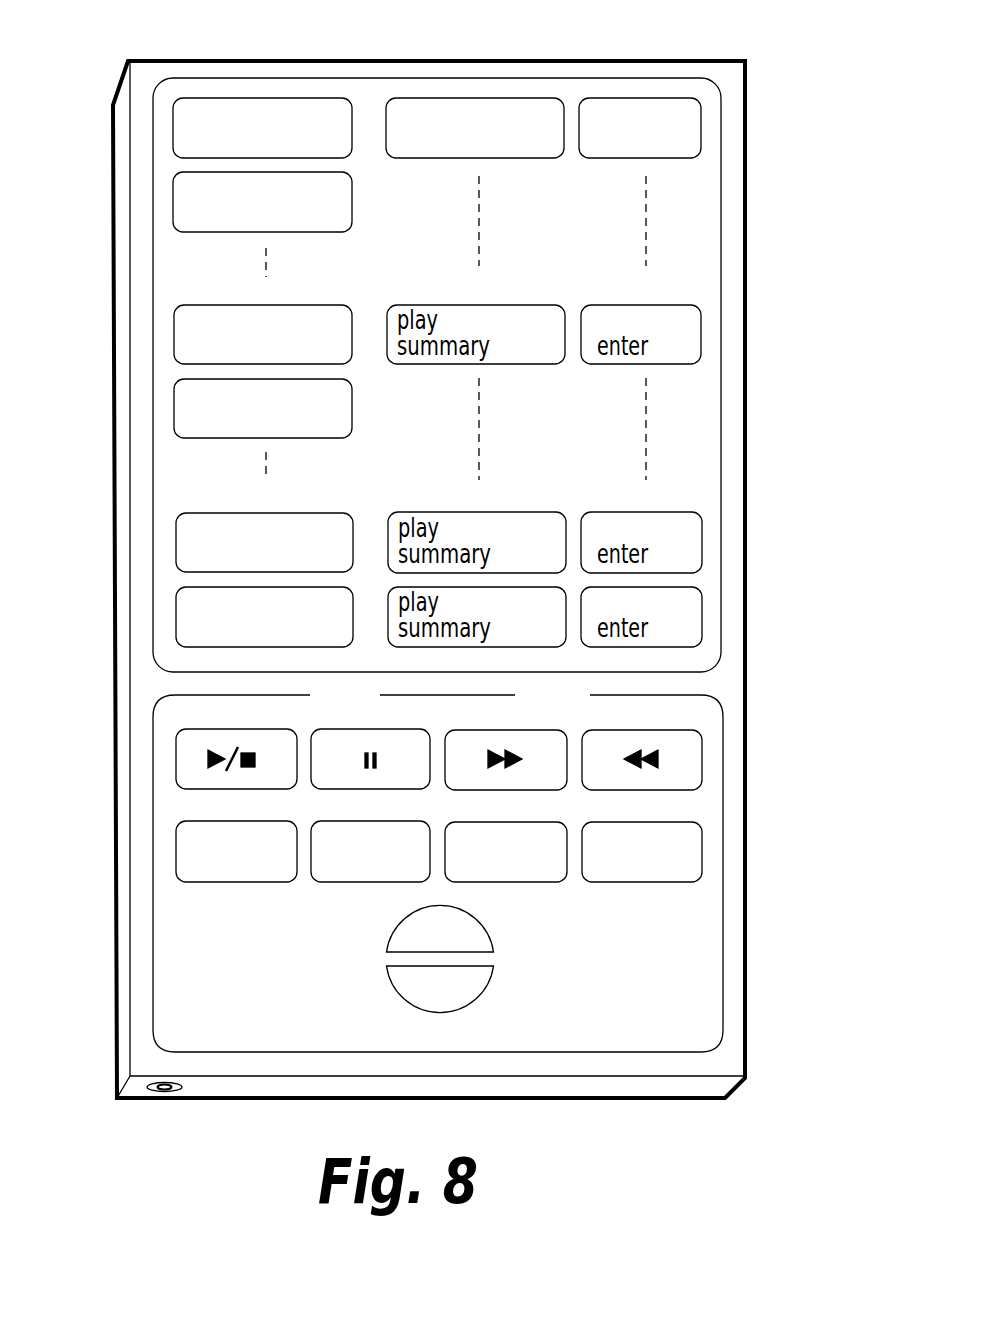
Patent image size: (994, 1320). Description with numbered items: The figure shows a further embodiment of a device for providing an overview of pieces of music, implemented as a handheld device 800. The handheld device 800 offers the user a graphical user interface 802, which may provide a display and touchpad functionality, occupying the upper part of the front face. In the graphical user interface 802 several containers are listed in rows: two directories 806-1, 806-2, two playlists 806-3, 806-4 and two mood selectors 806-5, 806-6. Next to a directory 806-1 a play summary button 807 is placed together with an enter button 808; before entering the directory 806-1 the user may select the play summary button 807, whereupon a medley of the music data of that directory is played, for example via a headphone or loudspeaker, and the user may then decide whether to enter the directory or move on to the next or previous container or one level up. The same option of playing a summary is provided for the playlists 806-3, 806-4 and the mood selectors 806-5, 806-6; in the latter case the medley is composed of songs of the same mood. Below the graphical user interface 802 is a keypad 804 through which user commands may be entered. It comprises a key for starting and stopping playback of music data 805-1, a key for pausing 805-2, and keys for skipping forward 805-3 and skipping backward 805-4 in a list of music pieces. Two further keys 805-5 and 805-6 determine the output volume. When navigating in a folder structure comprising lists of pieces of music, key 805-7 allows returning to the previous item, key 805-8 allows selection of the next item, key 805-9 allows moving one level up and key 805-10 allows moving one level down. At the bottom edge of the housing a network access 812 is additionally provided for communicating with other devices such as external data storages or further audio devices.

The handheld device 800 is at (745, 170).
The graphical user interface 802 is at (721, 262).
The keypad 804 is at (723, 720).
The directory 806-1 is at (173, 131).
The directory 806-2 is at (173, 203).
The playlist 806-3 is at (174, 336).
The playlist 806-4 is at (174, 409).
The mood selector 806-5 is at (176, 544).
The mood selector 806-6 is at (176, 618).
The play summary button 807 is at (468, 98).
The enter button 808 is at (630, 98).
The key for starting and stopping playback 805-1 is at (176, 758).
The key for pausing 805-2 is at (346, 729).
The key for skipping forward 805-3 is at (533, 730).
The key for skipping backward 805-4 is at (702, 760).
The volume key 805-5 is at (387, 943).
The volume key 805-6 is at (485, 983).
The previous item key 805-7 is at (176, 853).
The next item key 805-8 is at (335, 882).
The level up key 805-9 is at (548, 882).
The level down key 805-10 is at (702, 852).
The network access 812 is at (165, 1092).